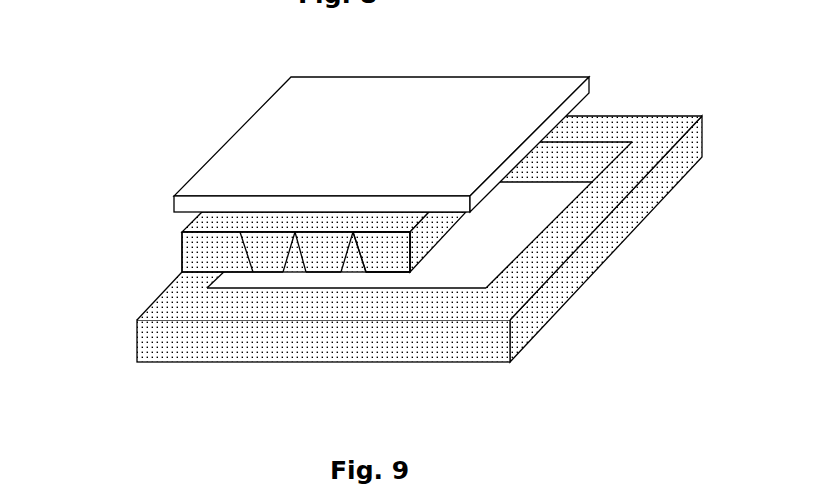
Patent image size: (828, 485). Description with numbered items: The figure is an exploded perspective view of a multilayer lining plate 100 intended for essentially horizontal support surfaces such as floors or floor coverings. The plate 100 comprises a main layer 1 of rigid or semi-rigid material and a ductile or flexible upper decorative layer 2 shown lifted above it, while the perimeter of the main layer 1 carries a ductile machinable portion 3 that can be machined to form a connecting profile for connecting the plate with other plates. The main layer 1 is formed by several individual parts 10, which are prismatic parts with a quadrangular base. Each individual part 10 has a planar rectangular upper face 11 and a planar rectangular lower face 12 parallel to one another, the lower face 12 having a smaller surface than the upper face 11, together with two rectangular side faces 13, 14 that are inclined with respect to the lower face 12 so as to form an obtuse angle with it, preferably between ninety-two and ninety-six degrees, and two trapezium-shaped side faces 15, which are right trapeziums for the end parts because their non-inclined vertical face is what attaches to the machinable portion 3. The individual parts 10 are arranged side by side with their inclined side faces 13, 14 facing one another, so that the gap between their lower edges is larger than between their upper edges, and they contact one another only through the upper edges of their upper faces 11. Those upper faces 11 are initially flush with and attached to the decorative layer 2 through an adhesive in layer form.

The main layer 1 is at (324, 269).
The upper decorative layer 2 is at (493, 100).
The machinable portion 3 is at (653, 117).
The individual parts 10 is at (168, 244).
The upper face 11 is at (319, 269).
The lower face 12 is at (385, 250).
The side face 13 is at (295, 240).
The side face 14 is at (350, 240).
The trapezium-shaped side face 15 is at (272, 240).
The lining plate 100 is at (393, 245).